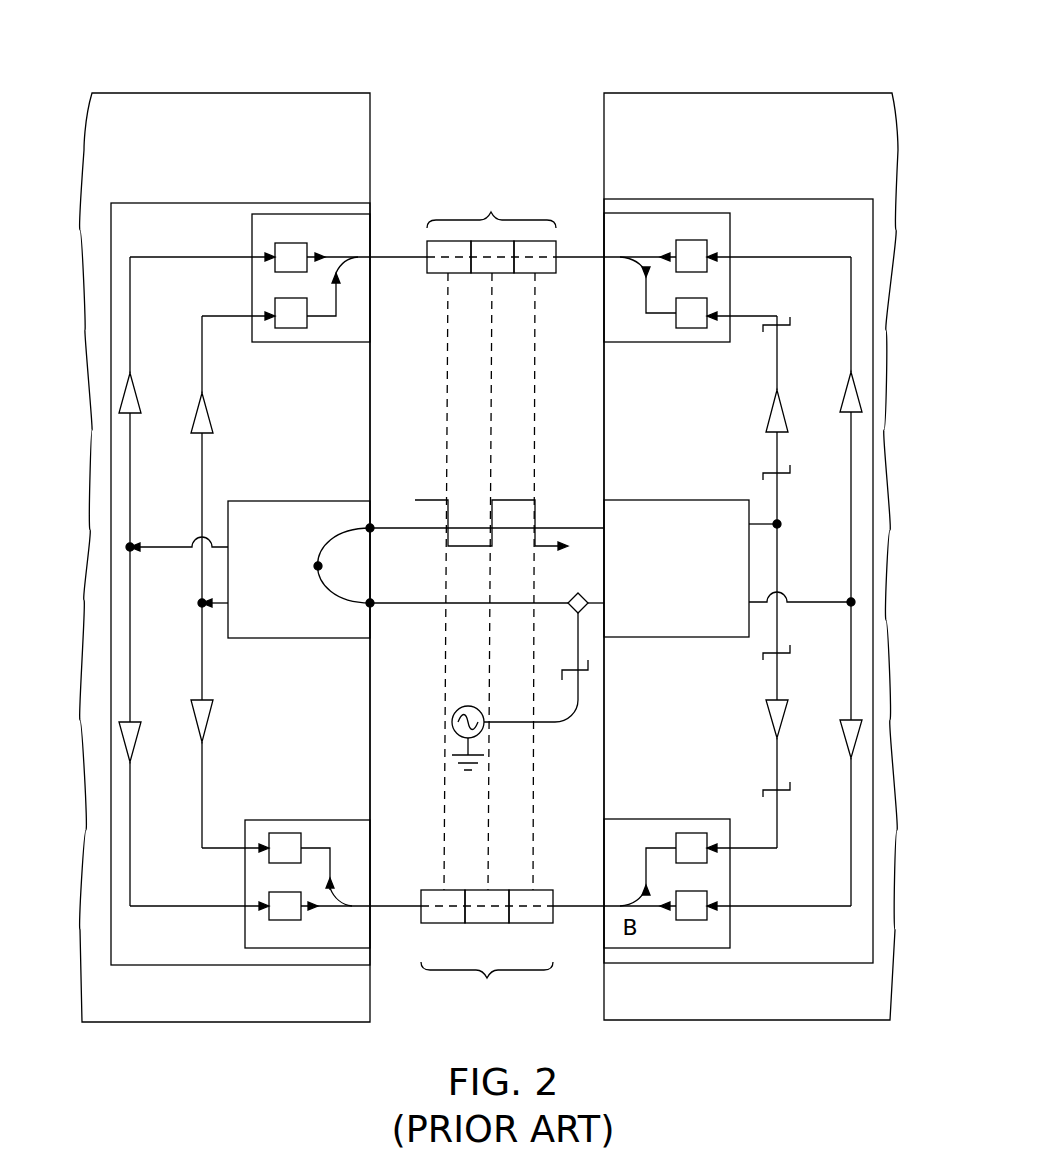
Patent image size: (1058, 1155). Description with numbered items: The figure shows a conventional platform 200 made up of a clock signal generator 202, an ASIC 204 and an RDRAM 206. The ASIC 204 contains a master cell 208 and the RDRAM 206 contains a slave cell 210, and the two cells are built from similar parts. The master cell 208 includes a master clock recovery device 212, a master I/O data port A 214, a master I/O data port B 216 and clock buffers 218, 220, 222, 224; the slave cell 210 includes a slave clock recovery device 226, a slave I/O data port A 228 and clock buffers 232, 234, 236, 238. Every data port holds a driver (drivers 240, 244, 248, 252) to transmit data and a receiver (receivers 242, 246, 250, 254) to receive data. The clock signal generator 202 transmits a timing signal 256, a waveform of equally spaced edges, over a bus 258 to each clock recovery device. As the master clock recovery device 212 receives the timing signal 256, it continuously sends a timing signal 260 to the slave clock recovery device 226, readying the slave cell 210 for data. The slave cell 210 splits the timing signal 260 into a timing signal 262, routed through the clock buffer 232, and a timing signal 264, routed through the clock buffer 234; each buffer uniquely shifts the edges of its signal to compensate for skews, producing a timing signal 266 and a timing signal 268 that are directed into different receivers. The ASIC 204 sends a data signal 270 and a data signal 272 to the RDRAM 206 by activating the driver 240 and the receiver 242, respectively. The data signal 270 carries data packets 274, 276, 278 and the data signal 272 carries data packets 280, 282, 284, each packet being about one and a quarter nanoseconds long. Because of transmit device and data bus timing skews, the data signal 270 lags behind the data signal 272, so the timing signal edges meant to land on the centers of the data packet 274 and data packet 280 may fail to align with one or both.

The conventional platform 200 is at (622, 48).
The clock signal generator 202 is at (456, 734).
The ASIC 204 is at (120, 124).
The RDRAM 206 is at (832, 124).
The master cell 208 is at (128, 231).
The slave cell 210 is at (825, 229).
The master clock recovery device 212 is at (247, 531).
The master I/O data port A 214 is at (325, 239).
The master I/O data port B 216 is at (332, 846).
The clock buffer 218 is at (208, 405).
The clock buffer 220 is at (208, 722).
The clock buffer 222 is at (134, 380).
The clock buffer 224 is at (137, 742).
The slave clock recovery device 226 is at (702, 529).
The slave I/O data port A 228 is at (627, 238).
The clock buffer 232 is at (771, 404).
The clock buffer 234 is at (771, 722).
The clock buffer 236 is at (847, 378).
The clock buffer 238 is at (847, 744).
The driver 240 is at (275, 245).
The receiver 242 is at (275, 301).
The driver 244 is at (269, 920).
The receiver 246 is at (269, 862).
The driver 248 is at (707, 245).
The receiver 250 is at (707, 301).
The driver 252 is at (707, 920).
The receiver 254 is at (707, 862).
The timing signal 256 is at (590, 672).
The bus 258 is at (552, 722).
The timing signal 260 is at (544, 507).
The timing signal 262 is at (791, 475).
The timing signal 264 is at (791, 655).
The timing signal 266 is at (791, 327).
The timing signal 268 is at (791, 792).
The data signal 270 is at (493, 247).
The data signal 272 is at (488, 950).
The data packet 274 is at (540, 273).
The data packet 276 is at (486, 273).
The data packet 278 is at (440, 273).
The data packet 280 is at (540, 923).
The data packet 282 is at (478, 923).
The data packet 284 is at (433, 923).